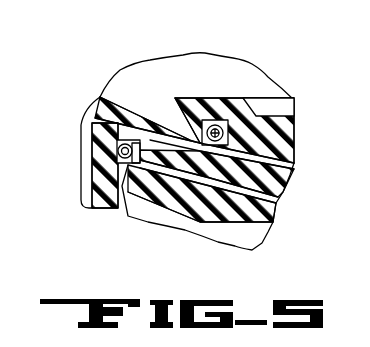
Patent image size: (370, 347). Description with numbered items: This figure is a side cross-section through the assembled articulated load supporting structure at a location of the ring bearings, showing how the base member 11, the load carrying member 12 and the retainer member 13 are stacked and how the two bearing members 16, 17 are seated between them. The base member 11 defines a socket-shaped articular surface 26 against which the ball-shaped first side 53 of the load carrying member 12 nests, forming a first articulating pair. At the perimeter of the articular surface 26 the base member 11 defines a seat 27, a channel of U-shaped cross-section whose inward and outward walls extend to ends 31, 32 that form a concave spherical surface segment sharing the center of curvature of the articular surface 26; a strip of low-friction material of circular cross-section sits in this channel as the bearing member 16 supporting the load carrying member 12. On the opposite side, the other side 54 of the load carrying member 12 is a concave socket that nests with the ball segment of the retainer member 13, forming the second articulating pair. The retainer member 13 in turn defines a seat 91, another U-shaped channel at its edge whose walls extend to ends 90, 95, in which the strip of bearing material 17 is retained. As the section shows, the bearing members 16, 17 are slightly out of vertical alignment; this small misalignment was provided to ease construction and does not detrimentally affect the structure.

The base member 11 is at (84, 145).
The load carrying member 12 is at (110, 104).
The retainer member 13 is at (180, 97).
The bearing member 16 is at (118, 148).
The bearing member 17 is at (246, 100).
The articular surface 26 is at (277, 199).
The seat 27 is at (140, 185).
The end of inward wall 31 is at (172, 176).
The end of outward wall 32 is at (100, 120).
The first side 53 is at (208, 190).
The other side 54 is at (134, 108).
The end of inward wall 90 is at (295, 164).
The seat 91 is at (216, 124).
The end of outward wall 95 is at (170, 122).